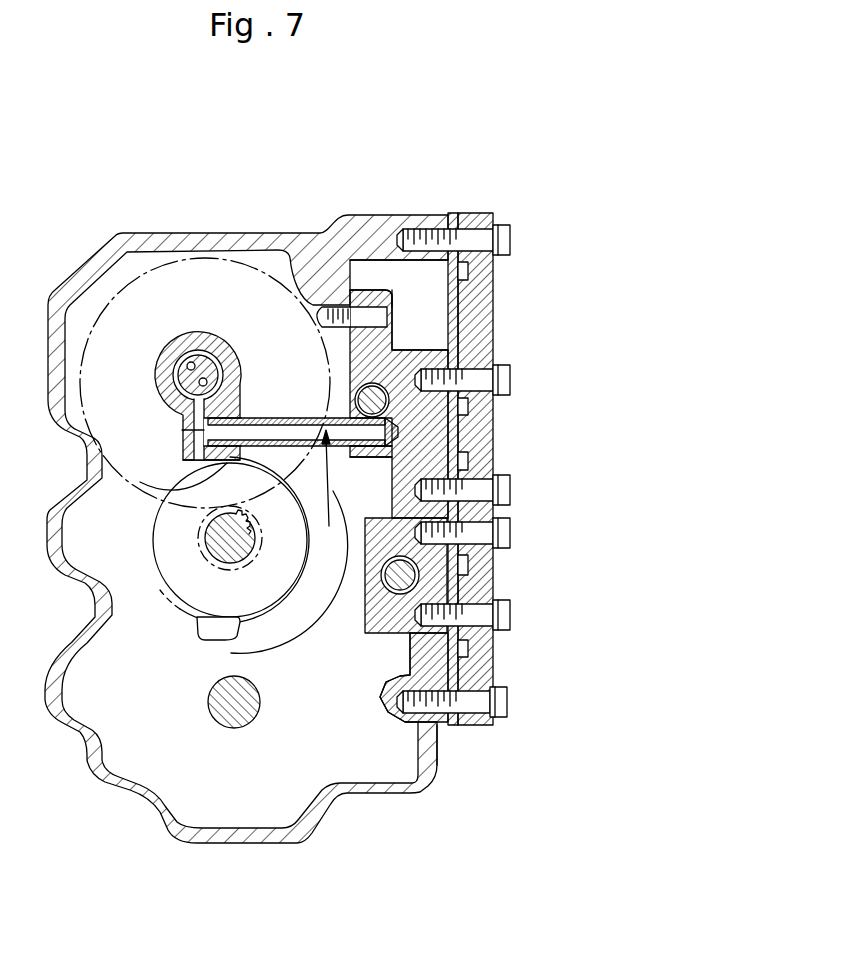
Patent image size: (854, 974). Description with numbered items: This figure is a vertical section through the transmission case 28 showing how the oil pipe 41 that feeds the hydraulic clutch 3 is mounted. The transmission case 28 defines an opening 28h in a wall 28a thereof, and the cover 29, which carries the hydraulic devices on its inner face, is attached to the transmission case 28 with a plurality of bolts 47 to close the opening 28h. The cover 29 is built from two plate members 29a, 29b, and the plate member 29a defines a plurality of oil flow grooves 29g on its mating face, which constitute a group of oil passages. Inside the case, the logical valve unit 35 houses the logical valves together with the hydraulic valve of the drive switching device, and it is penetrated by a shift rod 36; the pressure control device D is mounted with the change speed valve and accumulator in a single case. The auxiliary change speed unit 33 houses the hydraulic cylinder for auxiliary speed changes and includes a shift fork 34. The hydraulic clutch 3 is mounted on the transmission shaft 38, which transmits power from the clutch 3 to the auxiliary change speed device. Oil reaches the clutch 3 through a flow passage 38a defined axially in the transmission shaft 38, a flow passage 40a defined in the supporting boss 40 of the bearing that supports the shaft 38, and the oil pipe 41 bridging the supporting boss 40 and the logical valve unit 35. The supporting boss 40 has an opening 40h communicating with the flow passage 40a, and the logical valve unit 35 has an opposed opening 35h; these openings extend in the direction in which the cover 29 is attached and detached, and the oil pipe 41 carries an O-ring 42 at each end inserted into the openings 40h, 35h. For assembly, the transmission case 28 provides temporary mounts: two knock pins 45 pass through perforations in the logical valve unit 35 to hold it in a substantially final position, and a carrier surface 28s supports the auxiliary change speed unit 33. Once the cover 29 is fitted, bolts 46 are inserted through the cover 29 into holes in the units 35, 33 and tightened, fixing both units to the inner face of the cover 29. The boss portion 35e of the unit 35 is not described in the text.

The transmission case 28 is at (182, 226).
The wall 28a is at (440, 753).
The opening 28h is at (444, 333).
The carrier surface 28s is at (410, 630).
The hydraulic clutch 3 is at (243, 262).
The cover 29 is at (483, 415).
The plate member 29a is at (478, 214).
The plate member 29b is at (455, 214).
The oil flow grooves 29g is at (464, 407).
The auxiliary change speed unit 33 is at (372, 596).
The shift fork 34 is at (248, 642).
The logical valve unit 35 is at (357, 357).
The holder boss 35e is at (388, 318).
The opening 35h is at (335, 446).
The shift rod 36 is at (358, 398).
The transmission shaft 38 is at (178, 380).
The flow passage 38a is at (189, 352).
The supporting boss 40 is at (166, 347).
The flow passage 40a is at (182, 433).
The opening 40h is at (258, 455).
The oil pipe 41 is at (277, 419).
The O-ring 42 is at (157, 505).
The knock pins 45 is at (363, 316).
The bolts 46 is at (511, 380).
The bolts 47 is at (511, 240).
The pressure control device D is at (331, 493).